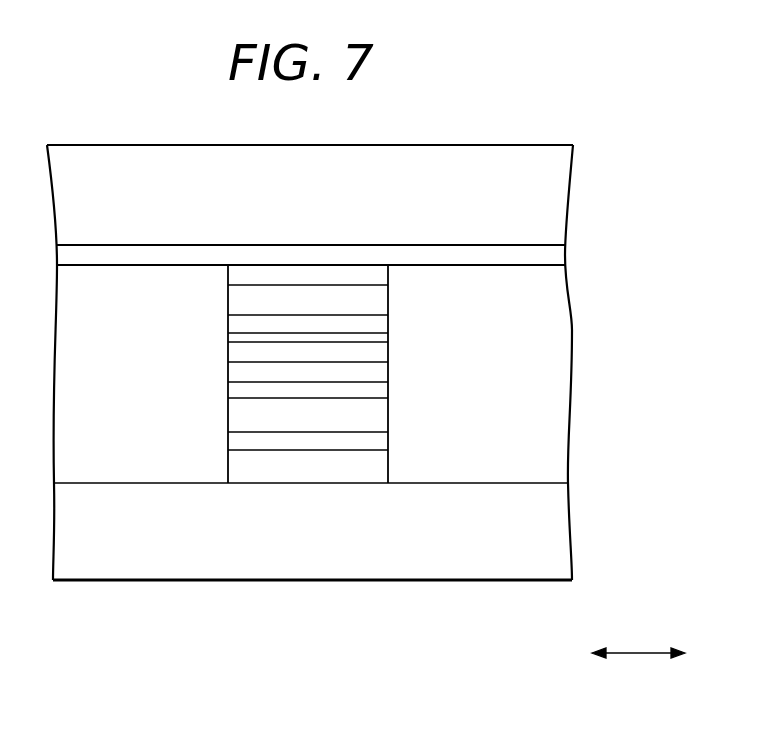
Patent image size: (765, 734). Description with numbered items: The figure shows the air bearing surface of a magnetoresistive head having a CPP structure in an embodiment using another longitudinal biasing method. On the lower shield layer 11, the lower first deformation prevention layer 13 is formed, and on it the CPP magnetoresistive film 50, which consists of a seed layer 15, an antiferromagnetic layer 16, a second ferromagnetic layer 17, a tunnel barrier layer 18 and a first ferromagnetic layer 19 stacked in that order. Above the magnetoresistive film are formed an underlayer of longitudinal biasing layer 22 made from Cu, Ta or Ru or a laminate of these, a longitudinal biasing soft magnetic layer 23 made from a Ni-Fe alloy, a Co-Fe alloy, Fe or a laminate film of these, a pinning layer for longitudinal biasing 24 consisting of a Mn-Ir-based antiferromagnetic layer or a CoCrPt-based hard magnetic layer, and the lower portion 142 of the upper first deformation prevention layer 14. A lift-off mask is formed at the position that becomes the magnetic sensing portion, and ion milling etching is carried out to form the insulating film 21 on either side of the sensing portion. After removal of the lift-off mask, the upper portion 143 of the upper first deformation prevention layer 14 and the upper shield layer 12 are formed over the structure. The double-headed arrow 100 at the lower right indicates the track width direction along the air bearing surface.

The lower shield layer 11 is at (98, 567).
The upper shield layer 12 is at (118, 158).
The lower first deformation prevention layer 13 is at (297, 470).
The upper first deformation prevention layer 14 is at (395, 190).
The lower portion of the upper first deformation prevention layer 142 is at (318, 272).
The upper portion of the upper first deformation prevention layer 143 is at (370, 256).
The seed layer 15 is at (353, 440).
The antiferromagnetic layer 16 is at (388, 417).
The second ferromagnetic layer 17 is at (388, 390).
The tunnel barrier layer 18 is at (388, 371).
The first ferromagnetic layer 19 is at (388, 354).
The insulating film 21 is at (145, 287).
The underlayer of longitudinal biasing layer 22 is at (388, 338).
The longitudinal biasing soft magnetic layer 23 is at (240, 325).
The pinning layer for longitudinal biasing 24 is at (275, 298).
The CPP magnetoresistive film 50 is at (228, 345).
The track width direction 100 is at (637, 650).